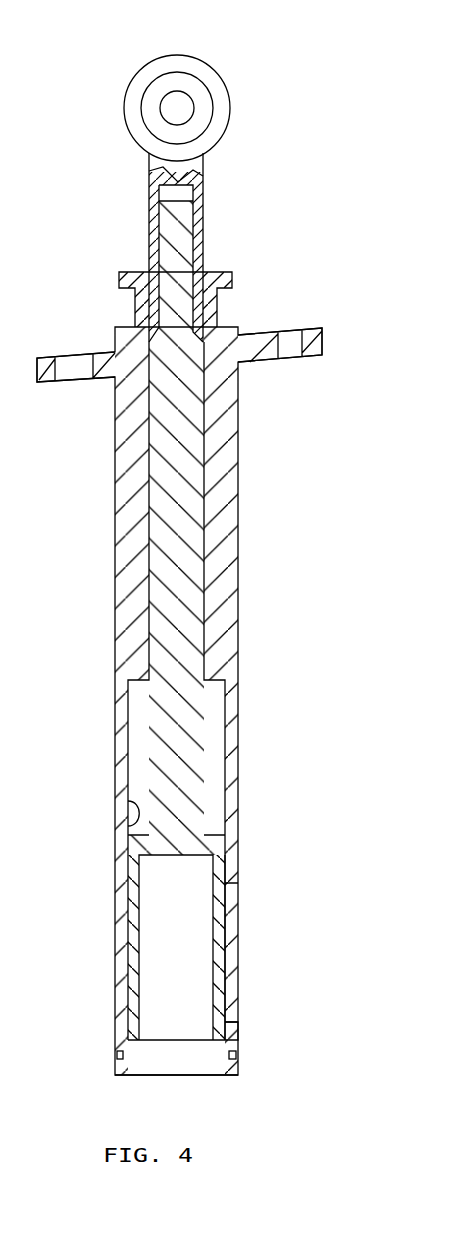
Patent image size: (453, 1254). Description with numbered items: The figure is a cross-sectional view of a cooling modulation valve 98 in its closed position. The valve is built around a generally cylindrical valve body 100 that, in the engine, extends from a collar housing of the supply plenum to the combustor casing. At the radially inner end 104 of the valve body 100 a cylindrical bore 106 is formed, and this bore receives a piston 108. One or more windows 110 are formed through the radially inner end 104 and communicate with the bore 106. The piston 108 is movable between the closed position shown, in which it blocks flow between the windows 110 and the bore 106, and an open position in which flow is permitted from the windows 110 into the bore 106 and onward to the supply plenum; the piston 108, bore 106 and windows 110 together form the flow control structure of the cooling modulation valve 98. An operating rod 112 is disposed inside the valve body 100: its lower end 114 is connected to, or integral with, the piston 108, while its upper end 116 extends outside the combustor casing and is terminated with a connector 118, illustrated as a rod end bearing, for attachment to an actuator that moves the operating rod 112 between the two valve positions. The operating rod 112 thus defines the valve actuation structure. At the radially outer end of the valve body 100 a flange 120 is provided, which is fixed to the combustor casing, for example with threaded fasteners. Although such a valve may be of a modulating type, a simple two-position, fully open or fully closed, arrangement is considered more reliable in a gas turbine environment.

The cooling modulation valve 98 is at (298, 166).
The valve body 100 is at (228, 612).
The radially inner end 104 is at (99, 1074).
The cylindrical bore 106 is at (135, 822).
The piston 108 is at (225, 950).
The windows 110 is at (232, 1020).
The operating rod 112 is at (177, 555).
The lower end 114 is at (185, 826).
The upper end 116 is at (178, 263).
The connector 118 is at (207, 83).
The flange 120 is at (272, 333).